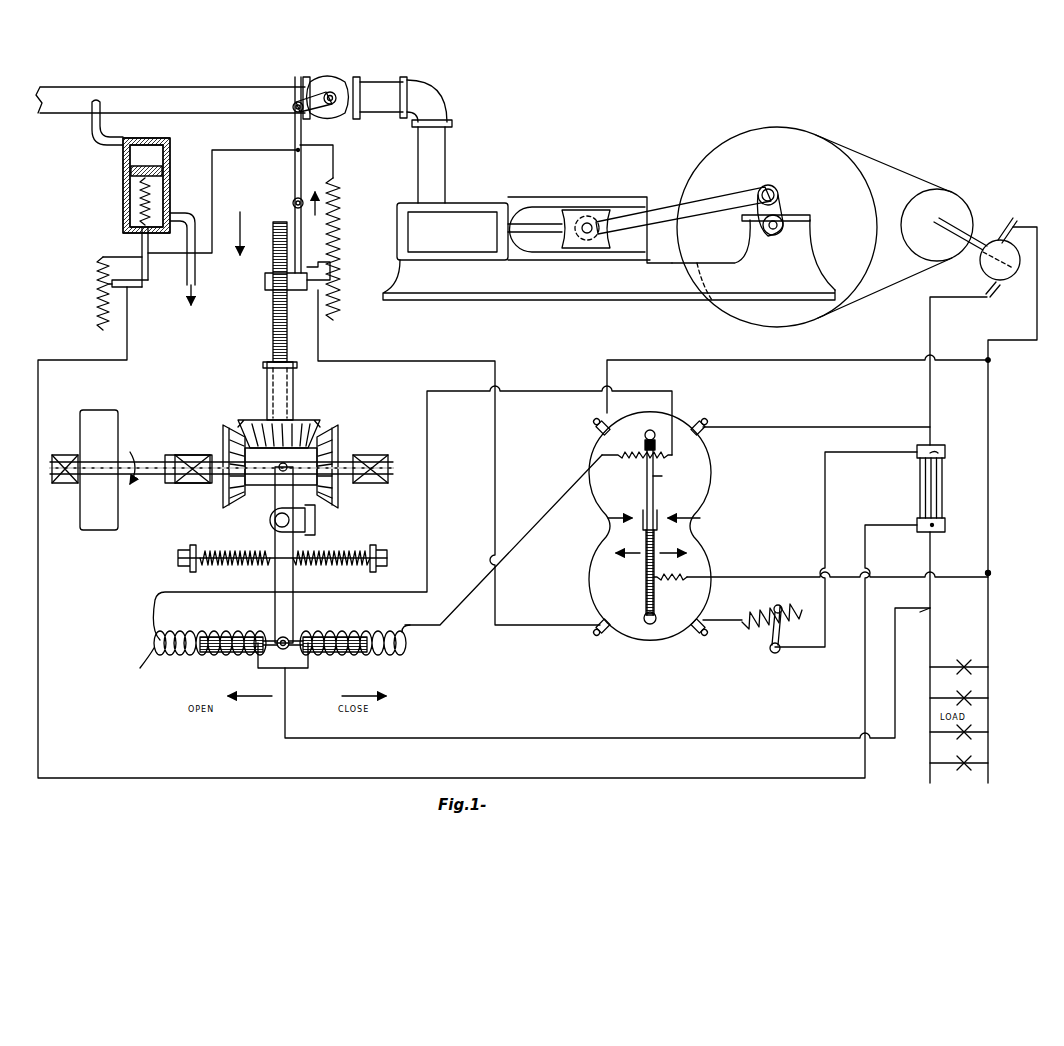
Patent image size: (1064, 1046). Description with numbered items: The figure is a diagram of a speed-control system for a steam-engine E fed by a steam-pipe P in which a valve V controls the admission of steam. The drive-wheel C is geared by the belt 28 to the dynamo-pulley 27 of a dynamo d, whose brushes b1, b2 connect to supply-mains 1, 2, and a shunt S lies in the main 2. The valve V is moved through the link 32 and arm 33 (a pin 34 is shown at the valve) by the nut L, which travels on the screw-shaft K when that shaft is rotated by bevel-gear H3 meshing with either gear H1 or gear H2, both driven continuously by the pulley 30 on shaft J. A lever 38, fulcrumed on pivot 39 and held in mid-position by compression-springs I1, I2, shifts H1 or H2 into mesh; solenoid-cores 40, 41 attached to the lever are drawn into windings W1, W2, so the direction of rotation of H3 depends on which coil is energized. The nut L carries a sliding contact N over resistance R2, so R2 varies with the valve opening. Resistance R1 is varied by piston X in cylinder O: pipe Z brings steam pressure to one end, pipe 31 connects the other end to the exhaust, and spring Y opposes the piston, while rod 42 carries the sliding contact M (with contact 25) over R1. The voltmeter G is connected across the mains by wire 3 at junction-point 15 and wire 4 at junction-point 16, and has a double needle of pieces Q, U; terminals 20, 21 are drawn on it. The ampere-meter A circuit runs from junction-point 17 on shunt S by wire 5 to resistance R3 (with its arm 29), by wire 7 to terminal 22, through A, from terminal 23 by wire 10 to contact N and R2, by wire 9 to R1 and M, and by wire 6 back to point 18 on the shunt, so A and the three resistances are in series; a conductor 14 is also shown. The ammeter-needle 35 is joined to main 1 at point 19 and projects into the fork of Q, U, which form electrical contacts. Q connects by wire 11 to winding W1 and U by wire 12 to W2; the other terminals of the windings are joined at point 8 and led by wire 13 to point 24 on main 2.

The steam-pipe P is at (219, 97).
The pipe Z is at (92, 128).
The cylinder O is at (158, 182).
The piston X is at (131, 172).
The spring Y is at (152, 200).
The rod 42 is at (149, 240).
The sliding contact M is at (118, 287).
The contact 25 is at (120, 286).
The resistance R1 is at (104, 293).
The pipe 31 is at (196, 285).
The wire 9 is at (344, 158).
The link 32 is at (301, 141).
The resistance R2 is at (346, 249).
The arm 33 is at (296, 98).
The valve crank pin 34 is at (334, 92).
The valve V is at (325, 76).
The engine E is at (609, 243).
The drive-wheel C is at (781, 127).
The belt 28 is at (848, 147).
The dynamo-pulley 27 is at (952, 198).
The dynamo d is at (990, 242).
The brush b1 is at (1017, 220).
The brush b2 is at (1000, 301).
The supply-main 1 is at (989, 496).
The supply-main 2 is at (931, 555).
The wire 3 is at (672, 360).
The junction-point 15 is at (986, 361).
The wire 4 is at (876, 423).
The junction-point 16 is at (929, 426).
The shunt S is at (946, 494).
The junction-point 17 is at (940, 452).
The point 18 is at (930, 526).
The wire 5 is at (884, 452).
The conductor 14 is at (768, 577).
The point 19 is at (990, 574).
The wire 13 is at (896, 676).
The point 24 is at (928, 610).
The wire 6 is at (127, 350).
The wire 10 is at (459, 457).
The wire 11 is at (202, 600).
The wire 12 is at (503, 542).
The solenoid-core 41 is at (407, 653).
The voltmeter G is at (655, 533).
The ammeter-needle 35 is at (645, 595).
The voltmeter-needle piece U is at (644, 476).
The voltmeter-needle piece Q is at (667, 478).
The ampere-meter A is at (670, 592).
The contact 20 is at (596, 432).
The contact 21 is at (702, 432).
The terminal 22 is at (696, 632).
The terminal 23 is at (609, 634).
The wire 7 is at (714, 616).
The resistance R3 is at (778, 606).
The resistance arm 29 is at (770, 643).
The screw-shaft K is at (288, 292).
The nut L is at (277, 287).
The sliding contact N is at (323, 262).
The bevel-gear H3 is at (248, 420).
The bevel-gear H1 is at (236, 508).
The bevel-gear H2 is at (340, 505).
The shaft J is at (221, 457).
The pulley 30 is at (108, 415).
The lever 38 is at (290, 615).
The pivot 39 is at (276, 513).
The compression-spring I1 is at (212, 550).
The compression-spring I2 is at (320, 568).
The point 8 is at (283, 668).
The winding W1 is at (210, 659).
The solenoid-core 40 is at (160, 655).
The winding W2 is at (353, 659).